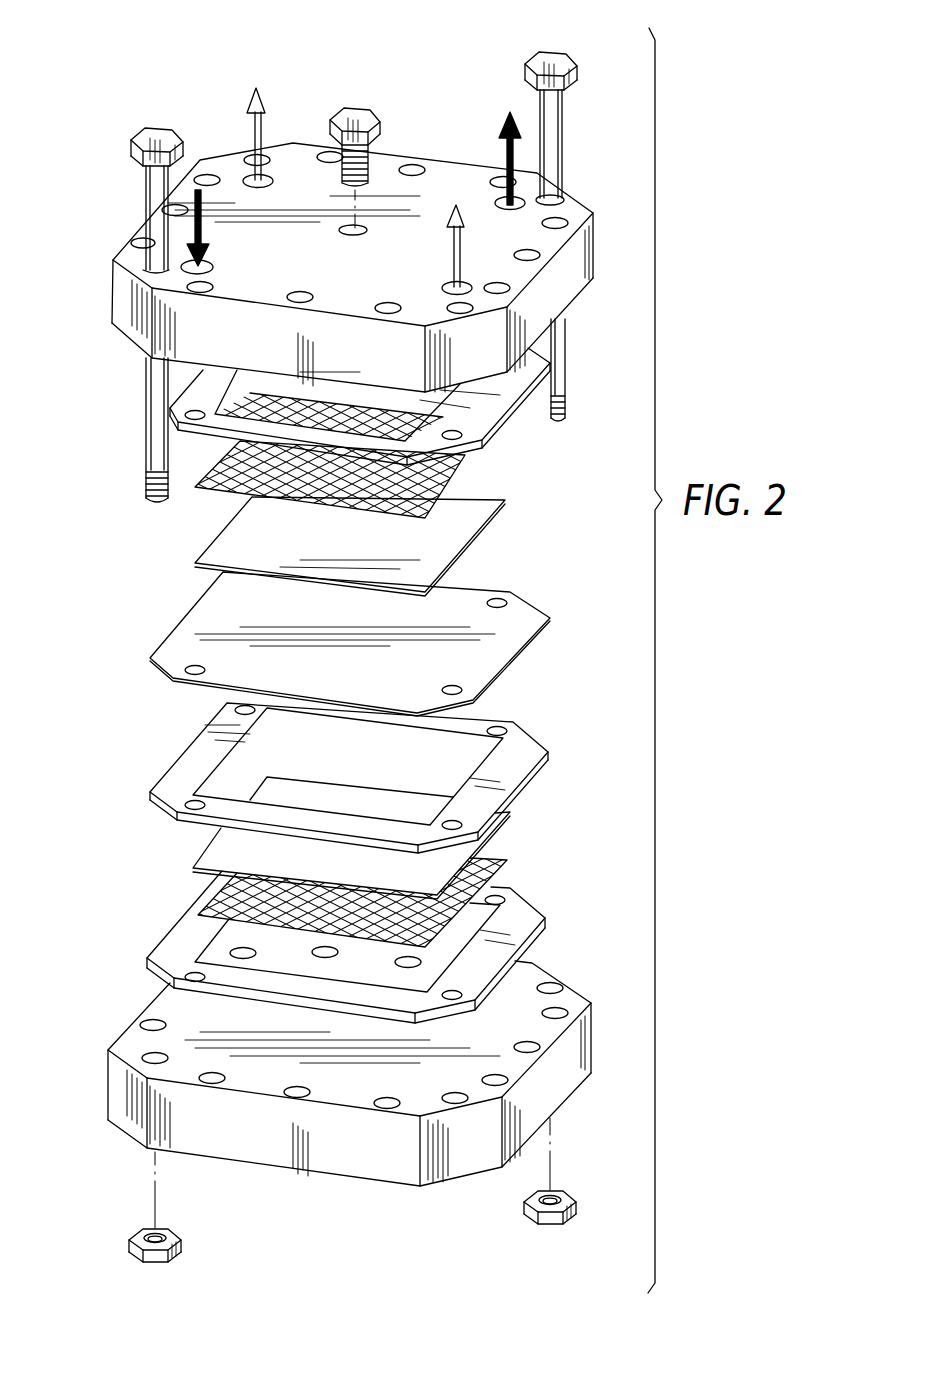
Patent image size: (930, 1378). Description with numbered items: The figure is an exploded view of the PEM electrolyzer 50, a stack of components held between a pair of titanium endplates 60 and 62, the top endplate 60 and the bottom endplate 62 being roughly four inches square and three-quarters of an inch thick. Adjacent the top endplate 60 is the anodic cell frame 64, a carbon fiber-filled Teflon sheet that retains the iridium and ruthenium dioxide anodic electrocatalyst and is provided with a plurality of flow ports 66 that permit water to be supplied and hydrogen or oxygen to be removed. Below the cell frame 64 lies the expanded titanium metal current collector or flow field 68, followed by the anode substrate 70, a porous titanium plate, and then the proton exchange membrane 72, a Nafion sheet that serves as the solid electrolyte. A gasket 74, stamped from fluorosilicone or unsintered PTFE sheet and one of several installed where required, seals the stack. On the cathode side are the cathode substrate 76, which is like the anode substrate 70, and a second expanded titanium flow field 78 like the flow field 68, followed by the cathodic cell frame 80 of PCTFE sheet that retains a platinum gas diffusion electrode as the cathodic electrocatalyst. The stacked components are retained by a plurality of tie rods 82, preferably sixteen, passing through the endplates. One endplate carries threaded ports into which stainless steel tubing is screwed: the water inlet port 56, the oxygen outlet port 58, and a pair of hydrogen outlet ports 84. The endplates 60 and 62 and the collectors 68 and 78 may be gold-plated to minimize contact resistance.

The PEM electrolyzer 50 is at (366, 62).
The water inlet port 56 is at (207, 233).
The oxygen outlet port 58 is at (502, 150).
The top endplate 60 is at (120, 292).
The bottom endplate 62 is at (130, 1090).
The anodic cell frame 64 is at (182, 377).
The flow ports 66 is at (178, 413).
The expanded titanium metal current collector (flow field) 68 is at (213, 483).
The anode substrate 70 is at (230, 550).
The proton exchange membrane 72 is at (183, 645).
The gasket 74 is at (177, 775).
The cathode substrate 76 is at (192, 868).
The expanded titanium flow field 78 is at (503, 872).
The cathodic cell frame 80 is at (180, 942).
The tie rods 82 is at (148, 136).
The hydrogen outlet ports 84 is at (262, 102).